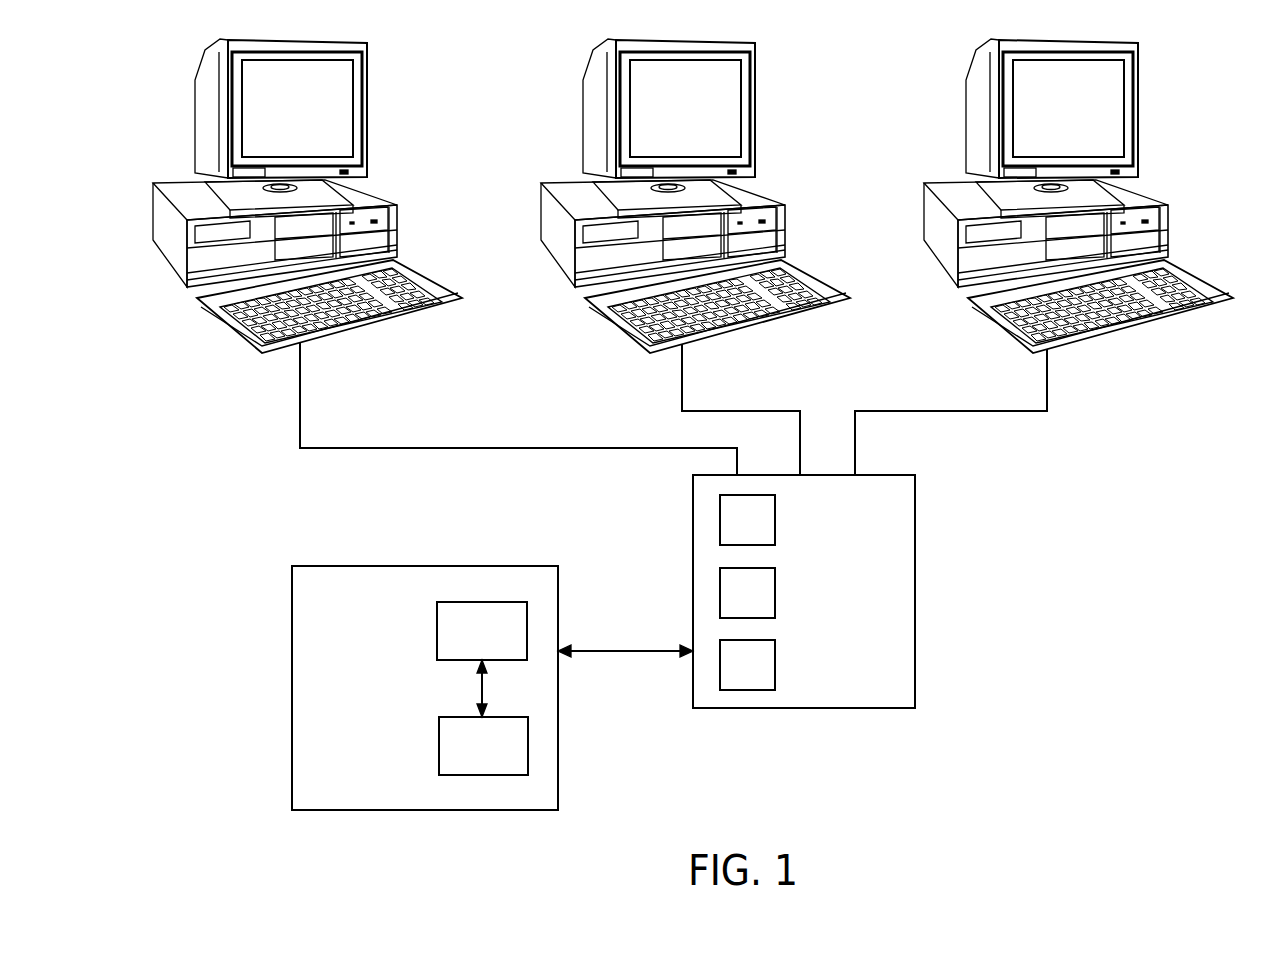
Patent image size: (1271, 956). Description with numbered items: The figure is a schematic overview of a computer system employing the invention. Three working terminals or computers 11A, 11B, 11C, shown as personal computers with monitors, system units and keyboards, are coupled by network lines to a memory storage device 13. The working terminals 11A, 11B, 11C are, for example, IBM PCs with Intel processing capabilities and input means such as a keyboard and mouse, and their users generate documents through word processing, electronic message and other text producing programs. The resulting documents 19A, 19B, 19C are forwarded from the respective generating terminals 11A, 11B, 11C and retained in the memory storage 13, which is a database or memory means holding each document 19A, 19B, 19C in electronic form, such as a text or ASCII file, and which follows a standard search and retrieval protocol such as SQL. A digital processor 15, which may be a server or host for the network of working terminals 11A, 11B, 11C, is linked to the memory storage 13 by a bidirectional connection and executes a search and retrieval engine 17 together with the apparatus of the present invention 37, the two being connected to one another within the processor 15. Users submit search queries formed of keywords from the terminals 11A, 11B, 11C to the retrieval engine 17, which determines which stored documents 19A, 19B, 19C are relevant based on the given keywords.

The working terminal 11A is at (316, 120).
The working terminal 11B is at (704, 120).
The working terminal 11C is at (1087, 120).
The memory storage device 13 is at (899, 696).
The digital processor 15 is at (348, 801).
The retrieval engine 17 is at (482, 631).
The document 19A is at (772, 520).
The document 19B is at (772, 593).
The document 19C is at (772, 665).
The apparatus of the present invention 37 is at (483, 746).